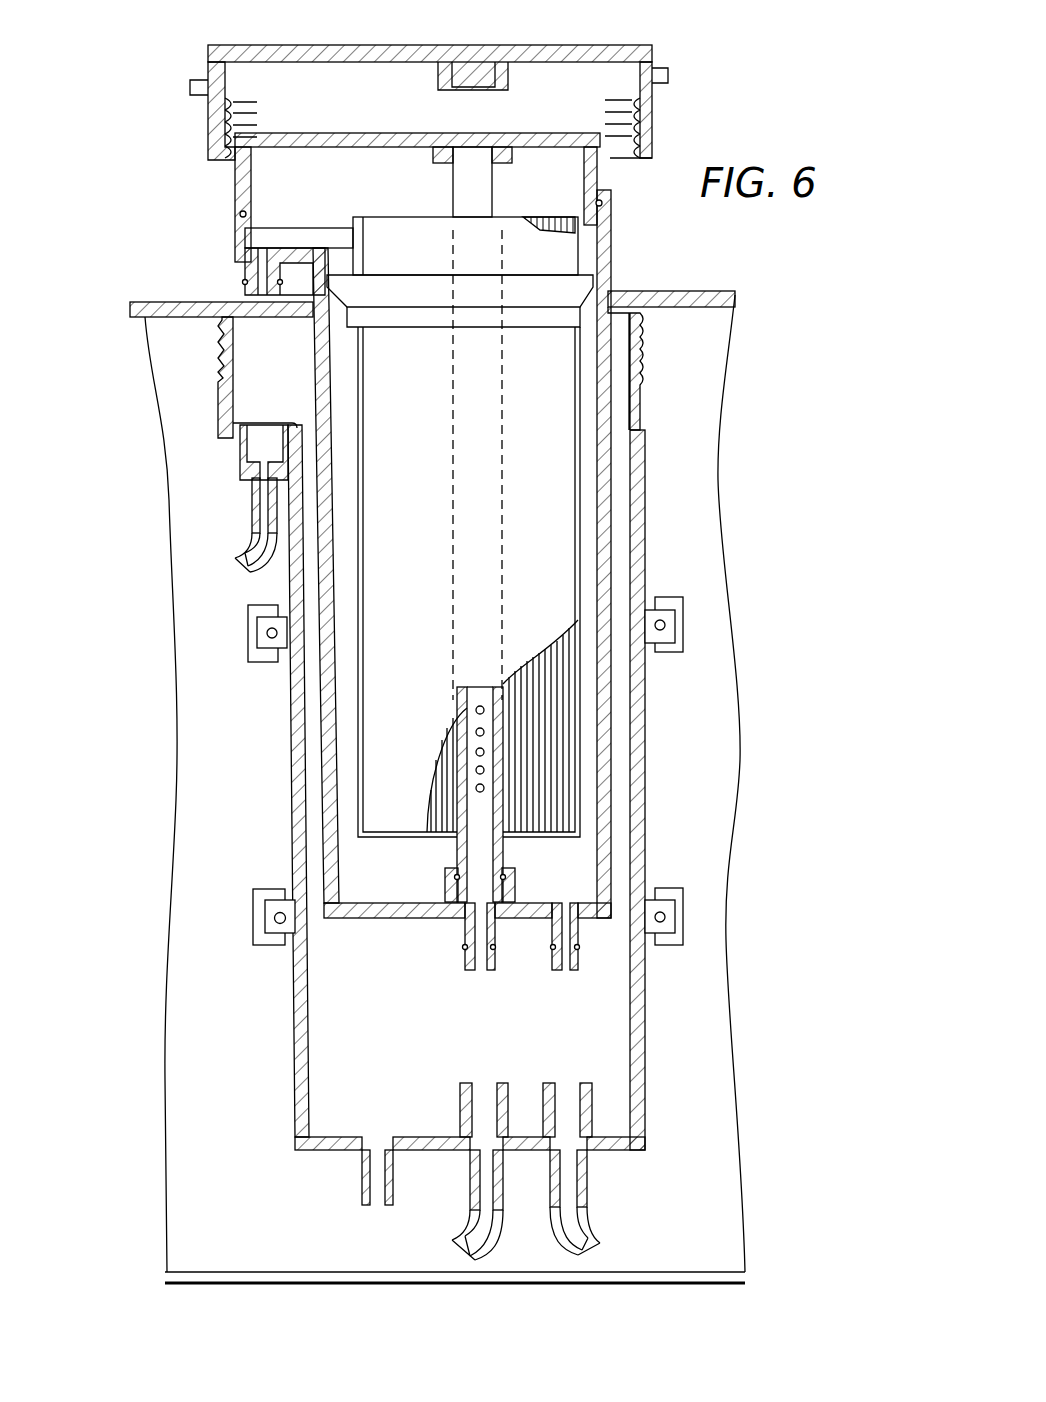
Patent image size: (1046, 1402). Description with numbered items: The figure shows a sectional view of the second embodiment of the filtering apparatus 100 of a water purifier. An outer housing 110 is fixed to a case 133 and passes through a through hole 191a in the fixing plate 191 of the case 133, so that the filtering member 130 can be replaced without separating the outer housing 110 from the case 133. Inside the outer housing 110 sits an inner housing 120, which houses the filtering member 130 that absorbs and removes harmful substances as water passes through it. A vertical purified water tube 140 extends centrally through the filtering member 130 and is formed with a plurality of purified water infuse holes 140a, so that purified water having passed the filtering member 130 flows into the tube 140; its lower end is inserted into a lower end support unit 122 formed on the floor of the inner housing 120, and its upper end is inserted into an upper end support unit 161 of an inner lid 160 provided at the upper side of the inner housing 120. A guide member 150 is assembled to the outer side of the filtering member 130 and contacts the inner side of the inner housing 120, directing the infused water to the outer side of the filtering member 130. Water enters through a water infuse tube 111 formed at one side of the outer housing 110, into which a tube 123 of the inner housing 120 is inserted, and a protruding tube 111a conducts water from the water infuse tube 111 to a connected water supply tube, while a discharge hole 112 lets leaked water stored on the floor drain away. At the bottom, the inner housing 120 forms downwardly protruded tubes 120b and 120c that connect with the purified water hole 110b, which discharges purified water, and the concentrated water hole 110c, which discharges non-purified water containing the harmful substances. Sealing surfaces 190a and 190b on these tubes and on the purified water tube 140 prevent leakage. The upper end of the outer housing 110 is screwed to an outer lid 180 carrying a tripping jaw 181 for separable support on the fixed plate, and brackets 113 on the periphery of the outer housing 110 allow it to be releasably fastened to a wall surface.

The filtering apparatus 100 is at (750, 273).
The outer housing 110 is at (296, 715).
The purified water hole 110b is at (487, 1178).
The concentrated water hole 110c is at (575, 1178).
The water infuse tube 111 is at (243, 452).
The protruding tube 111a is at (252, 498).
The discharge hole 112 is at (232, 537).
The brackets 113 is at (265, 902).
The inner housing 120 is at (608, 525).
The tube 120b is at (503, 967).
The tube 120c is at (580, 962).
The lower end support unit 122 is at (515, 876).
The tube 123 is at (247, 266).
The filtering member 130 is at (548, 767).
The case 133 is at (215, 1283).
The purified water tube 140 is at (482, 200).
The purified water infuse holes 140a is at (500, 692).
The guide member 150 is at (572, 298).
The inner lid 160 is at (579, 136).
The upper end support unit 161 is at (433, 156).
The outer lid 180 is at (282, 56).
The tripping jaw 181 is at (190, 87).
The sealing surfaces 190a is at (465, 948).
The sealing surfaces 190b is at (452, 890).
The fixing plate 191 is at (147, 302).
The through hole 191a is at (640, 302).